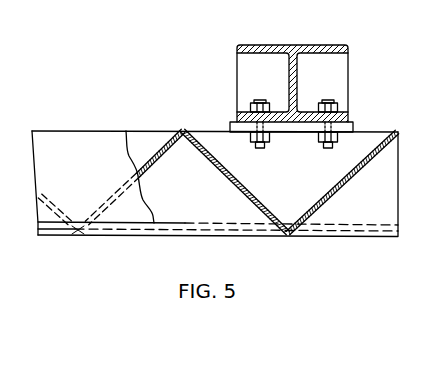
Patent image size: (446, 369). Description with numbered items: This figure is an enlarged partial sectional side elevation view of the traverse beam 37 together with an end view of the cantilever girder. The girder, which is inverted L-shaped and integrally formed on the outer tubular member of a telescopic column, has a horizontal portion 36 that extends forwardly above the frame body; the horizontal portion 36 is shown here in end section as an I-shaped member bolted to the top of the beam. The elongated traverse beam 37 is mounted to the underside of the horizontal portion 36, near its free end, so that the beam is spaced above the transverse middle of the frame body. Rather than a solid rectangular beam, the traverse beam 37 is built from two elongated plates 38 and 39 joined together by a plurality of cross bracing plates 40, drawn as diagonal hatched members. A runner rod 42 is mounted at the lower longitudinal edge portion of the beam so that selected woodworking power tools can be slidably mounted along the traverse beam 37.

The horizontal portion 36 is at (334, 52).
The traverse beam 37 is at (133, 106).
The elongated plate 38 is at (208, 137).
The elongated plate 39 is at (62, 144).
The cross bracing plates 40 is at (246, 188).
The runner rod 42 is at (110, 234).